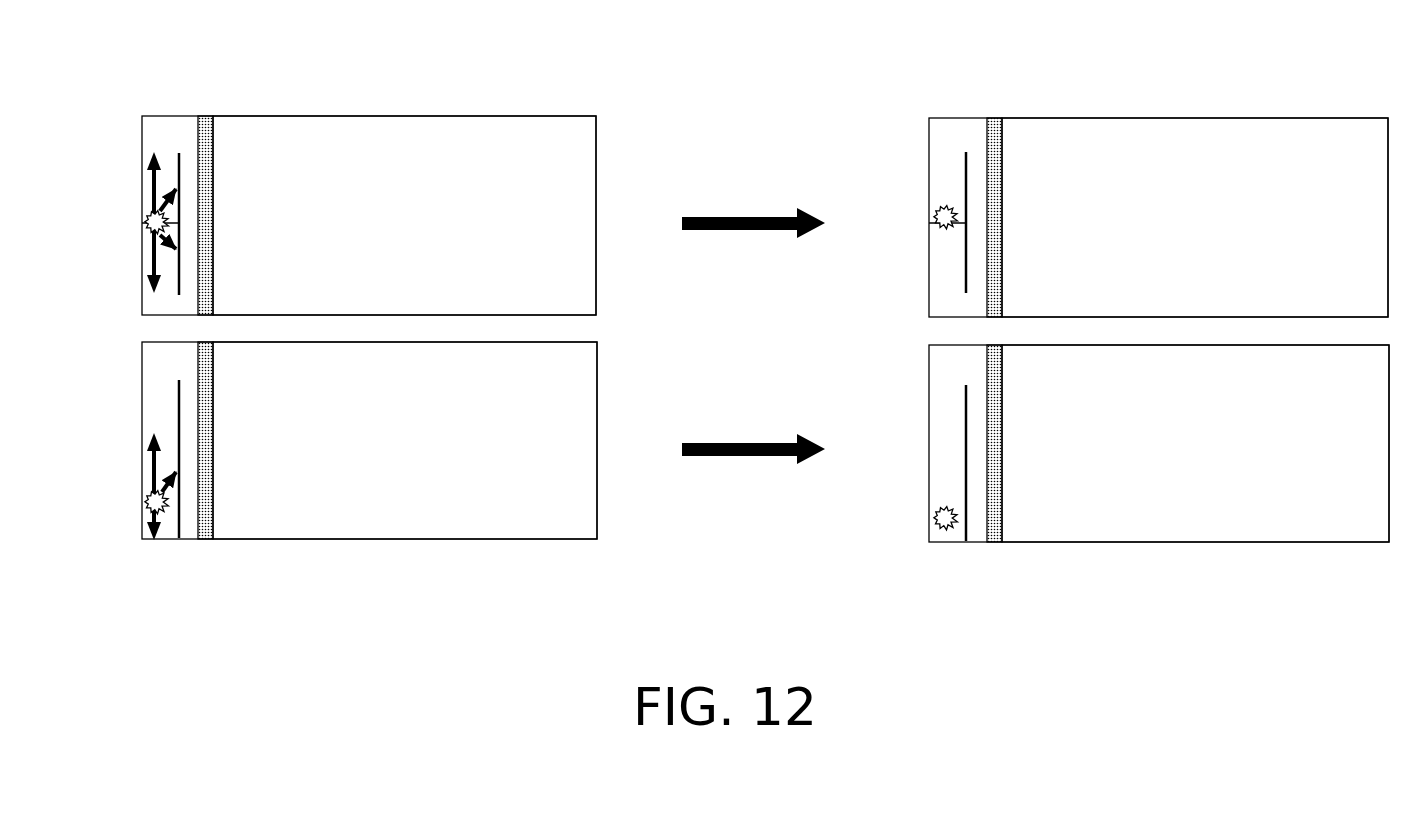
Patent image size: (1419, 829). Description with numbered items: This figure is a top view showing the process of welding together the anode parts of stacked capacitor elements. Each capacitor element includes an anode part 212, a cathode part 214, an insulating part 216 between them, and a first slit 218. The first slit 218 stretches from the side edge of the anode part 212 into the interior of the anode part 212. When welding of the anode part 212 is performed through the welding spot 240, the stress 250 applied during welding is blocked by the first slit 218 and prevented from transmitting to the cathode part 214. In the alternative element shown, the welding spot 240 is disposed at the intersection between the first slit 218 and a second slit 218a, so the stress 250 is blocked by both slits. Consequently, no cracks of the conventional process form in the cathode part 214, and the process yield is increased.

The anode part 212 is at (165, 112).
The cathode part 214 is at (390, 113).
The insulating part 216 is at (205, 115).
The first slit 218 is at (178, 155).
The second slit 218a is at (150, 232).
The welding spot 240 is at (146, 215).
The stress 250 is at (150, 159).